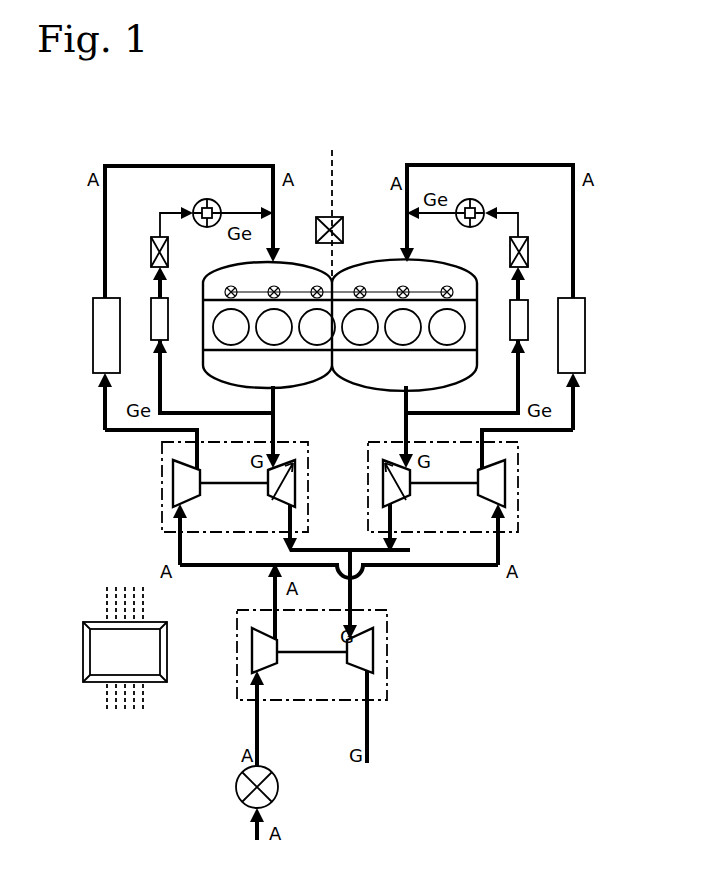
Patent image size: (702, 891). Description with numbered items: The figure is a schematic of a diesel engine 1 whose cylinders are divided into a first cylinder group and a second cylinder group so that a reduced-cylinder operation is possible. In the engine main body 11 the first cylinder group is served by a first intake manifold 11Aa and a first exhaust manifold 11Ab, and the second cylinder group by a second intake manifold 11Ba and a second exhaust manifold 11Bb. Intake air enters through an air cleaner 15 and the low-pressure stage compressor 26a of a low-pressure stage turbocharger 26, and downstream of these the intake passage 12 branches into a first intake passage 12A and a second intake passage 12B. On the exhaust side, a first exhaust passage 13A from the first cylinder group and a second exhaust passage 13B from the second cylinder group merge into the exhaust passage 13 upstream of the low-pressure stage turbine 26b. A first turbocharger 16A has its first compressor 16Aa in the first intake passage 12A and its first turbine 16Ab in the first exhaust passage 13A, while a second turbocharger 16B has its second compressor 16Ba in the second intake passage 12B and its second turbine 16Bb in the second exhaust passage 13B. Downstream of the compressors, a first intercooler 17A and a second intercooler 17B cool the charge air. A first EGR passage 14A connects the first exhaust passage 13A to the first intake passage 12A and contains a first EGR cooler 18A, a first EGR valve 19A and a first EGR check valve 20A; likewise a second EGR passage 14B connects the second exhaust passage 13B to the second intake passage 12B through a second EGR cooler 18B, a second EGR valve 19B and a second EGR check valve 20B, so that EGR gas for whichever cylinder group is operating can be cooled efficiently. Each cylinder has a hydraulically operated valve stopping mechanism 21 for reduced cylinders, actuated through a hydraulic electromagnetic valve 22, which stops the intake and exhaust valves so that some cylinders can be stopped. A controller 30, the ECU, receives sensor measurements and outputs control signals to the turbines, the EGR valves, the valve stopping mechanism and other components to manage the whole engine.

The engine 1 is at (509, 655).
The engine main body 11 is at (362, 390).
The first intake manifold 11Aa is at (244, 276).
The first exhaust manifold 11Ab is at (216, 361).
The second intake manifold 11Ba is at (433, 273).
The second exhaust manifold 11Bb is at (444, 381).
The intake passage 12 is at (258, 731).
The first intake passage 12A is at (248, 165).
The second intake passage 12B is at (430, 165).
The exhaust passage 13 is at (368, 722).
The first exhaust passage 13A is at (280, 439).
The second exhaust passage 13B is at (403, 419).
The first EGR passage 14A is at (173, 211).
The second EGR passage 14B is at (505, 211).
The air cleaner 15 is at (278, 808).
The first turbocharger 16A is at (196, 505).
The first compressor 16Aa is at (178, 497).
The first turbine 16Ab is at (270, 498).
The second turbocharger 16B is at (481, 503).
The second compressor 16Ba is at (512, 504).
The second turbine 16Bb is at (408, 493).
The first intercooler 17A is at (120, 332).
The second intercooler 17B is at (586, 334).
The first EGR cooler 18A is at (150, 306).
The second EGR cooler 18B is at (529, 306).
The first EGR valve 19A is at (150, 251).
The second EGR valve 19B is at (529, 251).
The first EGR check valve 20A is at (206, 199).
The second EGR check valve 20B is at (471, 199).
The valve stopping mechanism for reduced cylinders 21 is at (287, 283).
The hydraulic electromagnetic valve for reduced-cylinder control 22 is at (334, 217).
The low-pressure stage turbocharger 26 is at (305, 670).
The low-pressure stage compressor 26a is at (252, 660).
The low-pressure stage turbine 26b is at (368, 676).
The controller 30 is at (100, 683).